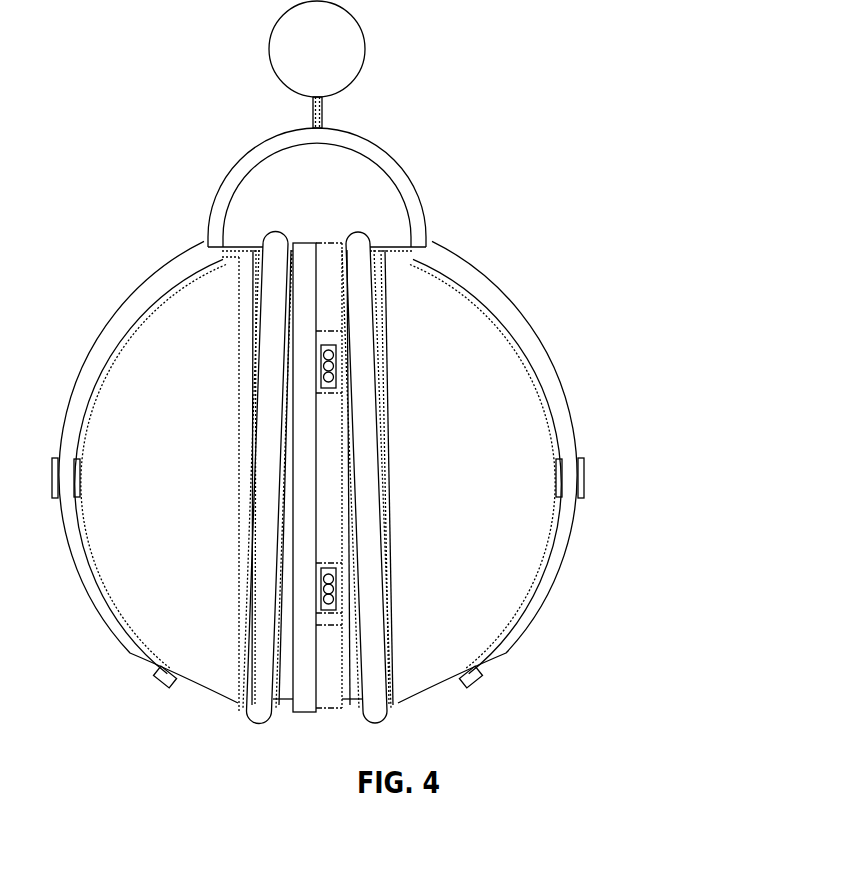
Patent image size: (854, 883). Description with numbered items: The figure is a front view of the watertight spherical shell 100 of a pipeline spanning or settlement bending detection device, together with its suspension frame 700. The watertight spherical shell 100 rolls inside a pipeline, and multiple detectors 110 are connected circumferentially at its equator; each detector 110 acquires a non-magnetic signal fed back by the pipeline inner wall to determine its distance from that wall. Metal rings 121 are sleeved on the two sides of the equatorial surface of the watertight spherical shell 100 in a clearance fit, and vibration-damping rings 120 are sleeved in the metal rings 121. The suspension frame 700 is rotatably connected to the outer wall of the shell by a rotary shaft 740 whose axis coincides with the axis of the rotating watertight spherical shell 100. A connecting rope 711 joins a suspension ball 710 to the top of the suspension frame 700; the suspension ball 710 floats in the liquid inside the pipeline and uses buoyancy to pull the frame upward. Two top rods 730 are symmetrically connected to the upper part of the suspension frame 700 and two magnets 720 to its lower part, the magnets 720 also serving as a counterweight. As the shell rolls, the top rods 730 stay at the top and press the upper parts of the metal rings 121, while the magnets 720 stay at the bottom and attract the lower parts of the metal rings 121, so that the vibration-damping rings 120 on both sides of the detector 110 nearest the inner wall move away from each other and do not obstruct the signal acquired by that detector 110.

The watertight spherical shell 100 is at (497, 367).
The detector 110 is at (335, 600).
The vibration-damping ring 120 is at (357, 272).
The metal ring 121 is at (388, 578).
The suspension frame 700 is at (552, 395).
The suspension ball 710 is at (330, 67).
The connecting rope 711 is at (311, 117).
The magnet 720 is at (468, 687).
The top rod 730 is at (396, 232).
The rotary shaft 740 is at (584, 482).